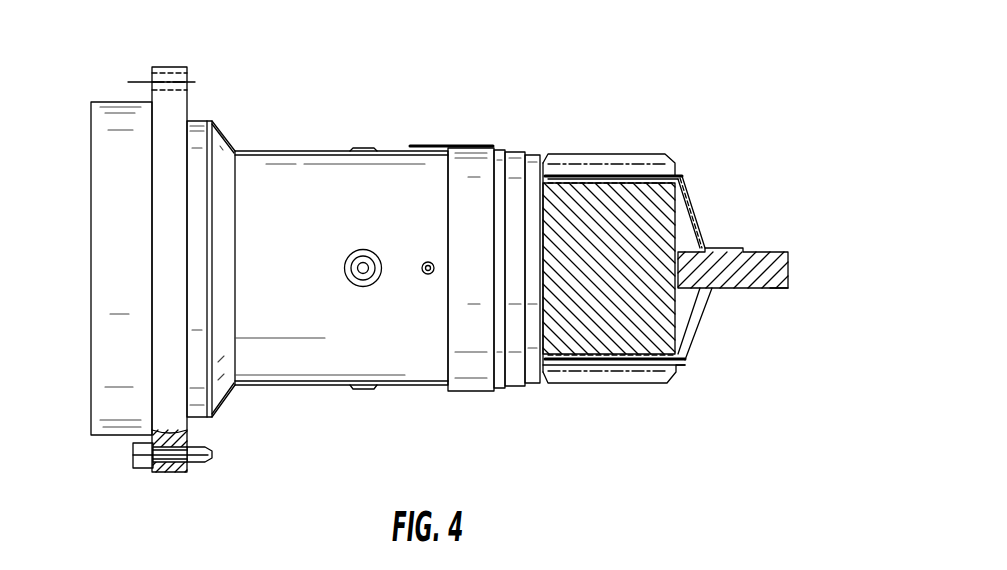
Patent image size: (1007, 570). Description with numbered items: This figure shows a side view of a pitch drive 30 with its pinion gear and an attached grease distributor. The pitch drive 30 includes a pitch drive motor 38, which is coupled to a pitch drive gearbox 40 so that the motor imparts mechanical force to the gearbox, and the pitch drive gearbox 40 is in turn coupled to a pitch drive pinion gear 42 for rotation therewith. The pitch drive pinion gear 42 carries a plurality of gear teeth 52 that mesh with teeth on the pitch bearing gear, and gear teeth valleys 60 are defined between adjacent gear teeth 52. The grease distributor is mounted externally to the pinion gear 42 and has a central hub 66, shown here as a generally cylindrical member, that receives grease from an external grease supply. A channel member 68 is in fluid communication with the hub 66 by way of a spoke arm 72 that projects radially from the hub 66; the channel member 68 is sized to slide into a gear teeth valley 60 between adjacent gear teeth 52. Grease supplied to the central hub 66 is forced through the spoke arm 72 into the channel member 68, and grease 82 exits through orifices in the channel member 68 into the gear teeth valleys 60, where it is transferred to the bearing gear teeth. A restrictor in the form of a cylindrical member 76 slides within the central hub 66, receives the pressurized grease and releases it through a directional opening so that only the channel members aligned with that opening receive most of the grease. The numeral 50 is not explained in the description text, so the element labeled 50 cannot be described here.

The pitch drive 30 is at (493, 86).
The pitch drive motor 38 is at (114, 102).
The pitch drive gearbox 40 is at (275, 386).
The pitch drive pinion gear 42 is at (663, 227).
The housing assembly 50 is at (810, 116).
The gear teeth 52 is at (633, 160).
The gear teeth valleys 60 is at (585, 160).
The central hub 66 is at (732, 248).
The channel member 68 is at (667, 173).
The spoke arm 72 is at (689, 315).
The cylindrical member 76 is at (778, 292).
The grease 82 is at (702, 236).